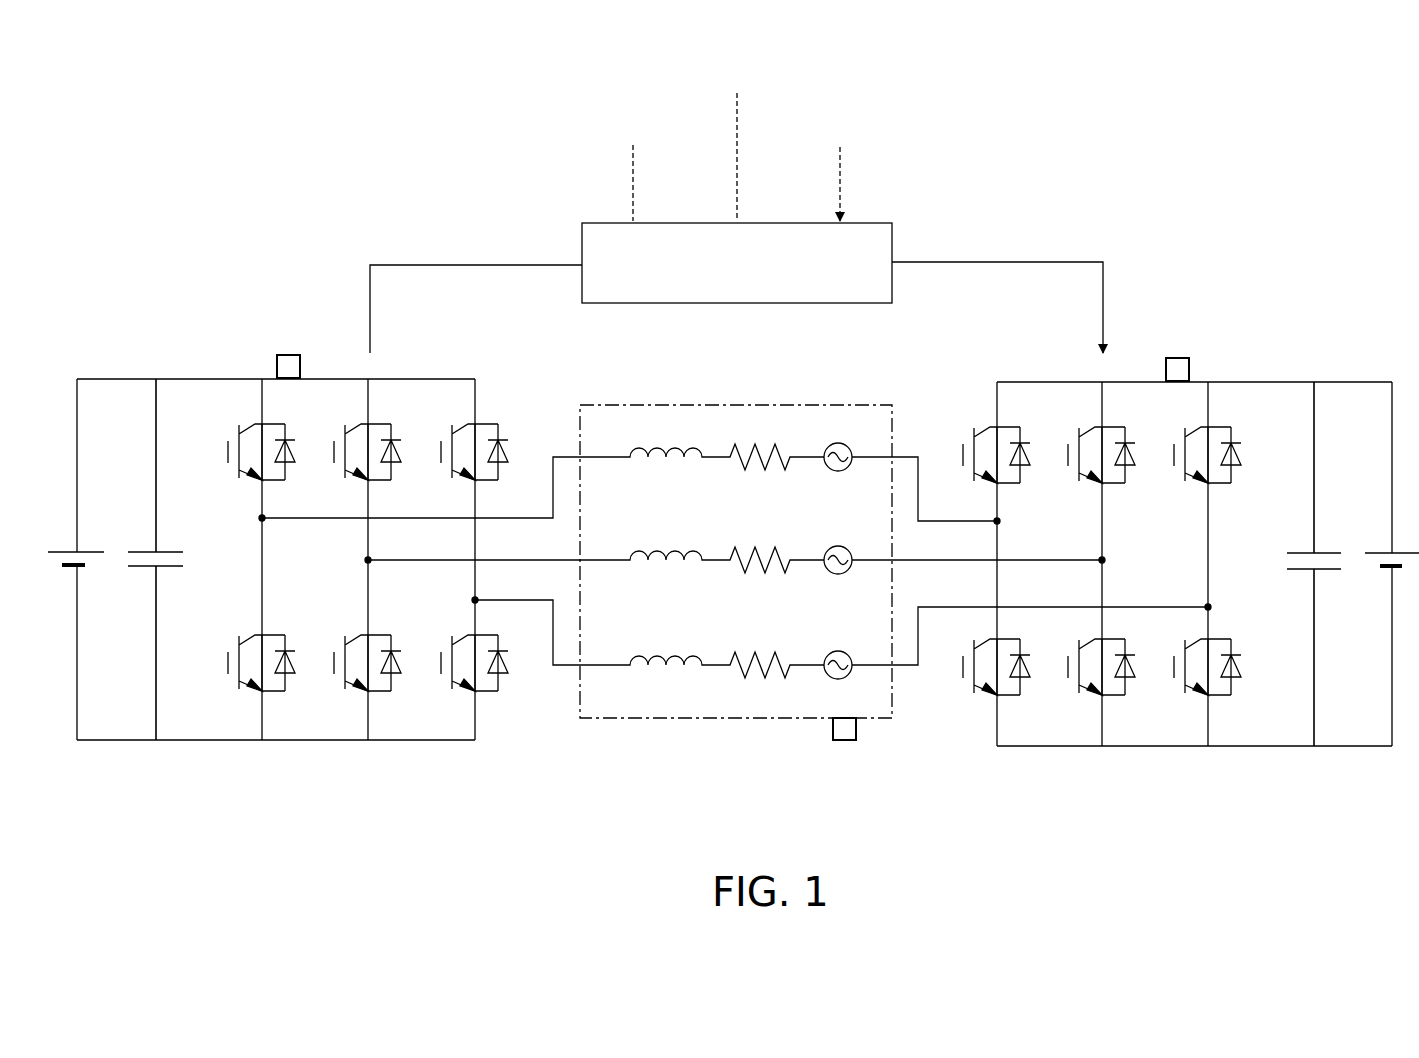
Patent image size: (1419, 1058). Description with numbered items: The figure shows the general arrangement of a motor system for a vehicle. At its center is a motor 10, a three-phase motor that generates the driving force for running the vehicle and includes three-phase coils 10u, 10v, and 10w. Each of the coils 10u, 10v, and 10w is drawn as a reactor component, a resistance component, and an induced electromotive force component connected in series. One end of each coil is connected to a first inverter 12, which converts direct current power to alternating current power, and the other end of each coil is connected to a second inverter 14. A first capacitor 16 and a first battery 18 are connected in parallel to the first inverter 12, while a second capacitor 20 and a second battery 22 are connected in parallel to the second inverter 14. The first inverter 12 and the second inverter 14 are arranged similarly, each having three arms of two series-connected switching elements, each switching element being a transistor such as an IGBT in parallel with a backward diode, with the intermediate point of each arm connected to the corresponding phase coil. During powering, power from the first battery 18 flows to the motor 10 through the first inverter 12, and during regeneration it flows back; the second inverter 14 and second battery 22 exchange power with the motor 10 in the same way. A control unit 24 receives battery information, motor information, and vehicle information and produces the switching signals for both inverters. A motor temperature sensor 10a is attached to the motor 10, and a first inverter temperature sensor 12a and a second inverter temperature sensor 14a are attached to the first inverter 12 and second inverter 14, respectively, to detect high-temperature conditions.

The motor 10 is at (735, 613).
The motor temperature sensor 10a is at (843, 742).
The U-phase coil 10u is at (722, 433).
The V-phase coil 10v is at (726, 540).
The W-phase coil 10w is at (730, 643).
The first inverter 12 is at (323, 355).
The first inverter temperature sensor 12a is at (283, 355).
The second inverter 14 is at (1142, 343).
The second inverter temperature sensor 14a is at (1180, 358).
The first capacitor 16 is at (166, 549).
The first battery 18 is at (88, 549).
The second capacitor 20 is at (1305, 550).
The second battery 22 is at (1385, 550).
The control unit 24 is at (893, 243).